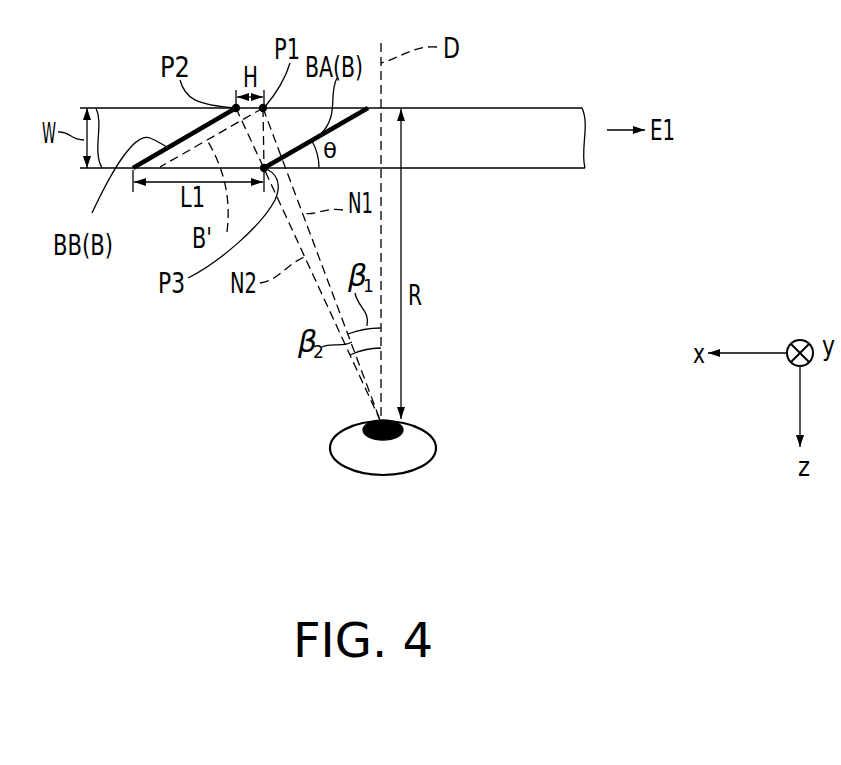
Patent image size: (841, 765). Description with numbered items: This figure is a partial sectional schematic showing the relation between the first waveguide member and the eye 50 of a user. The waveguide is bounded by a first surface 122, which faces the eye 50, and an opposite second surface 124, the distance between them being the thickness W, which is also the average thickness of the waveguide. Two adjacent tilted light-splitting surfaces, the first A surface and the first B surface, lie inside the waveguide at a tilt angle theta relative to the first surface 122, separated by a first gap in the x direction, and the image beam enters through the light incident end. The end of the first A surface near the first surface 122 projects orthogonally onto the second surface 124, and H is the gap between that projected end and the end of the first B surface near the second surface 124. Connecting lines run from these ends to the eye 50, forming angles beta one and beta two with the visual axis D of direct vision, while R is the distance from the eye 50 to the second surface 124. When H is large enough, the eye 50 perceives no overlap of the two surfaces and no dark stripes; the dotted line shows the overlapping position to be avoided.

The second surface 124 is at (537, 107).
The first surface 122 is at (538, 170).
The eye 50 is at (437, 445).